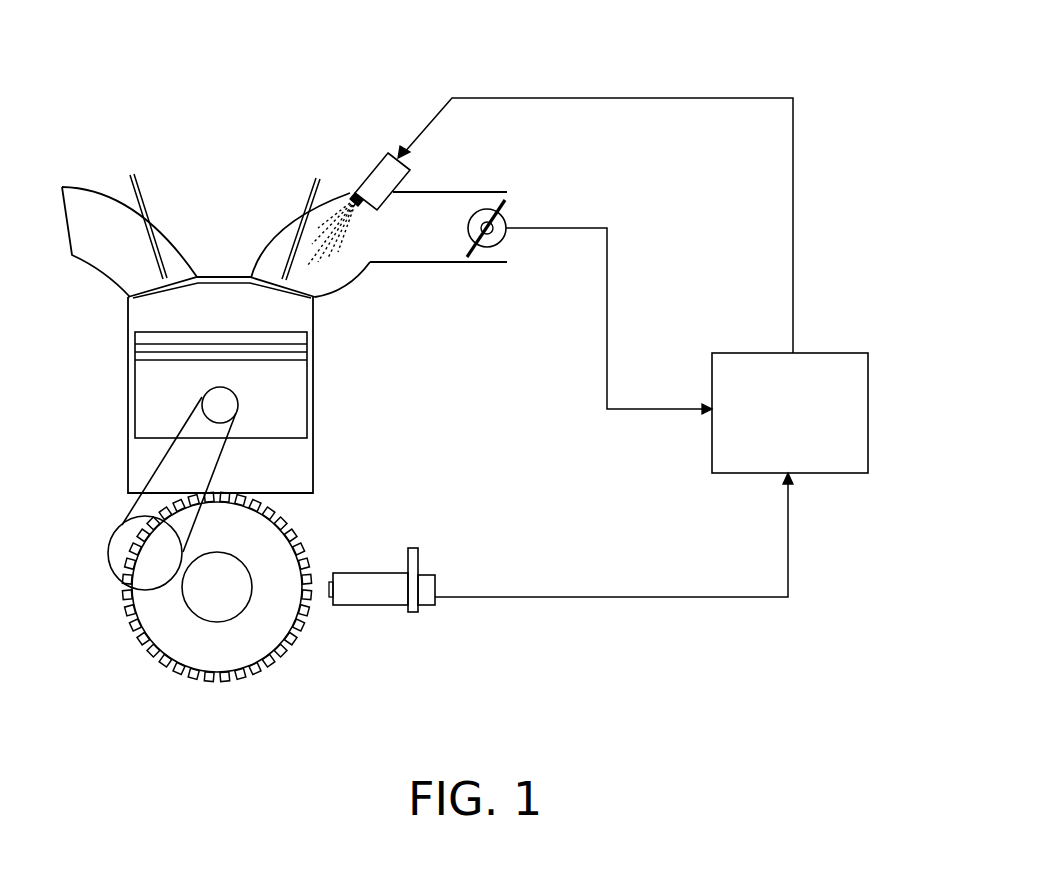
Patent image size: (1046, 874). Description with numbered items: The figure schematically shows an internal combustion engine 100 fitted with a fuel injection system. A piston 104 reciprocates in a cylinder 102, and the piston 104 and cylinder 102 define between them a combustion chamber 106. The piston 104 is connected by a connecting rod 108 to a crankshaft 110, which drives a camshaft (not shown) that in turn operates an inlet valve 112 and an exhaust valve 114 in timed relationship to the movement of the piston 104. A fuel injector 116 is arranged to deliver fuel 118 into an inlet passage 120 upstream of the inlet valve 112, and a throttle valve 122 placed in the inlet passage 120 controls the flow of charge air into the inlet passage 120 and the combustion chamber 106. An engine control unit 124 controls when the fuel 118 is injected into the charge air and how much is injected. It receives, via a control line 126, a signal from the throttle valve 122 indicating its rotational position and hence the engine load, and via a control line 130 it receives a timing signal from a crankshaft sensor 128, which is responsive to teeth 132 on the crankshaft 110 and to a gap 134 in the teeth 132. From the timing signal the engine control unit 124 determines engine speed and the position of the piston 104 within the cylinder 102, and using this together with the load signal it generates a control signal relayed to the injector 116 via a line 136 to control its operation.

The internal combustion engine 100 is at (127, 52).
The cylinder 102 is at (127, 417).
The piston 104 is at (290, 400).
The combustion chamber 106 is at (145, 315).
The connecting rod 108 is at (122, 513).
The crankshaft 110 is at (168, 633).
The inlet valve 112 is at (315, 178).
The exhaust valve 114 is at (135, 173).
The fuel injector 116 is at (378, 164).
The fuel 118 is at (352, 243).
The inlet passage 120 is at (440, 203).
The throttle valve 122 is at (477, 262).
The engine control unit 124 is at (712, 472).
The control line 126 is at (568, 228).
The crankshaft sensor 128 is at (437, 575).
The control line 130 is at (586, 597).
The teeth 132 is at (237, 682).
The gap 134 is at (293, 643).
The line 136 is at (628, 98).